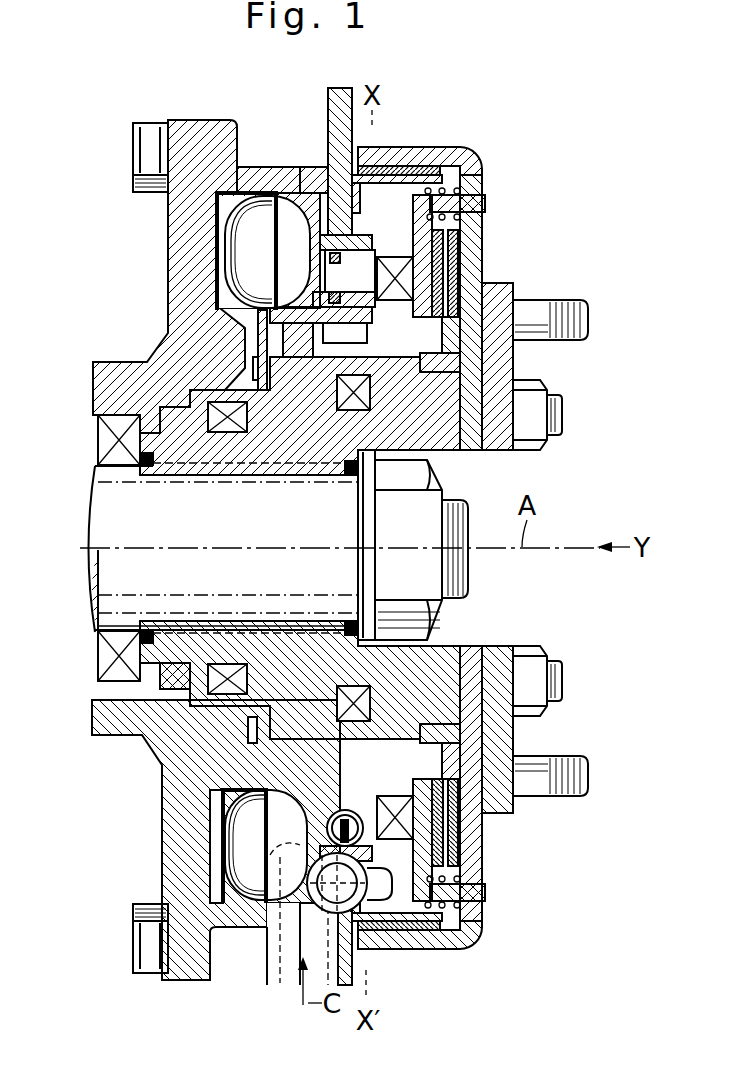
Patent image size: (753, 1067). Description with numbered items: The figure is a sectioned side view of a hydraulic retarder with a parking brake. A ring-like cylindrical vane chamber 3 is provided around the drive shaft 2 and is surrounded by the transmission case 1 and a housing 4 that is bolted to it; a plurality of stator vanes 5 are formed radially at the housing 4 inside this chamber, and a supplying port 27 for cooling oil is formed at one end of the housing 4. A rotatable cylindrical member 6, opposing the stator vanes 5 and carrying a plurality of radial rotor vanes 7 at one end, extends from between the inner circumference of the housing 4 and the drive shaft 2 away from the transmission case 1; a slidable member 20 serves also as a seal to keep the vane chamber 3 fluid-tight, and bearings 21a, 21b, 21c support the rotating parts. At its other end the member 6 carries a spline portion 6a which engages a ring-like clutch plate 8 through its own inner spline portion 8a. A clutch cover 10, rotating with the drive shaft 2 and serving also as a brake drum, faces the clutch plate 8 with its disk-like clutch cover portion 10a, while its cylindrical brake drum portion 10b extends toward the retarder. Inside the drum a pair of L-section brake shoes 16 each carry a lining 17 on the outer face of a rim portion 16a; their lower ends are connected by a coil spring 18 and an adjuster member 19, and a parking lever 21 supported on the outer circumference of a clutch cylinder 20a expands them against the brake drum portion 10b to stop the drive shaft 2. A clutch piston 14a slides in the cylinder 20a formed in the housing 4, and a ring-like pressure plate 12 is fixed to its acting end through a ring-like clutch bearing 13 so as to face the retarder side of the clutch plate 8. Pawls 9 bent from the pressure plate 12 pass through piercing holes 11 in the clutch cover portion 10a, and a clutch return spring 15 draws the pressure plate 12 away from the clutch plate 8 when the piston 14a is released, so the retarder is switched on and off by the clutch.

The transmission case 1 is at (185, 268).
The drive shaft 2 is at (343, 578).
The vane chamber 3 is at (222, 206).
The housing 4 is at (290, 188).
The stator vanes 5 is at (285, 243).
The rotatable cylindrical member 6 is at (290, 445).
The spline portion 6a is at (428, 375).
The rotor vanes 7 is at (243, 268).
The clutch plate 8 is at (460, 262).
The spline portion 8a is at (445, 363).
The pawls 9 is at (484, 200).
The clutch cover 10 is at (465, 539).
The clutch cover portion 10a is at (473, 242).
The brake drum portion 10b is at (432, 150).
The piercing holes 11 is at (470, 226).
The pressure plate 12 is at (417, 245).
The clutch bearing 13 is at (400, 300).
The clutch piston 14a is at (362, 290).
The clutch return spring 15 is at (455, 175).
The brake shoes 16 is at (362, 180).
The rim portion 16a is at (378, 172).
The lining 17 is at (410, 167).
The coil spring 18 is at (340, 805).
The adjuster member 19 is at (313, 918).
The slidable member 20 is at (172, 663).
The clutch cylinder 20a is at (322, 190).
The parking lever 21 is at (330, 112).
The bearing 21a is at (120, 468).
The bearing 21b is at (227, 420).
The bearing 21c is at (350, 408).
The supplying port 27 is at (288, 953).